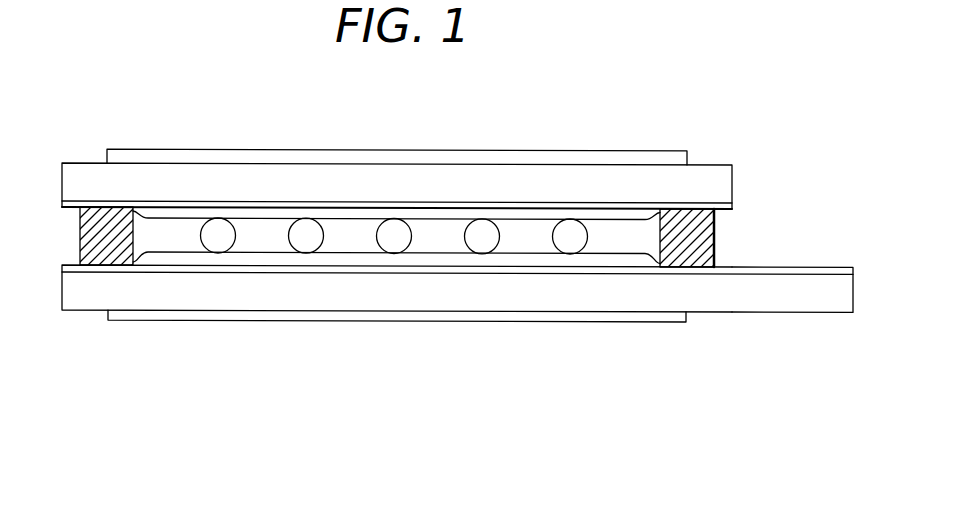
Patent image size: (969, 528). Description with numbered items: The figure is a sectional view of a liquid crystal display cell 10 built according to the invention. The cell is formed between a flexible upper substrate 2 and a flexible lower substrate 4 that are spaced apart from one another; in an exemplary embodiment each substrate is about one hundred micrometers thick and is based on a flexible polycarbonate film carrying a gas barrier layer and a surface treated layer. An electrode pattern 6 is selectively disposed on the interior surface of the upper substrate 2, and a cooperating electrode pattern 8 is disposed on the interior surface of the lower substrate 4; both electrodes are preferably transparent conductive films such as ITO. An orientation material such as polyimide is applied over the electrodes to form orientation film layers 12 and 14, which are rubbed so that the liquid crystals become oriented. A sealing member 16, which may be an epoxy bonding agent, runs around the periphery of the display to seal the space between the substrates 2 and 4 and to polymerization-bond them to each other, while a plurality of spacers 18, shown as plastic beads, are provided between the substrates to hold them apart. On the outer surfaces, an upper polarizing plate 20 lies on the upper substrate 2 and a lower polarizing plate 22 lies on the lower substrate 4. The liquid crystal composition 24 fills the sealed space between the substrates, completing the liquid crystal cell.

The upper substrate 2 is at (222, 180).
The lower substrate 4 is at (255, 285).
The electrode pattern 6 is at (717, 205).
The cooperating electrode pattern 8 is at (773, 270).
The liquid crystal display cell 10 is at (253, 96).
The orientation film layer 12 is at (329, 213).
The orientation film layer 14 is at (455, 260).
The sealing member 16 is at (683, 228).
The spacers 18 is at (312, 242).
The upper polarizing plate 20 is at (513, 158).
The lower polarizing plate 22 is at (667, 317).
The liquid crystal composition 24 is at (432, 232).